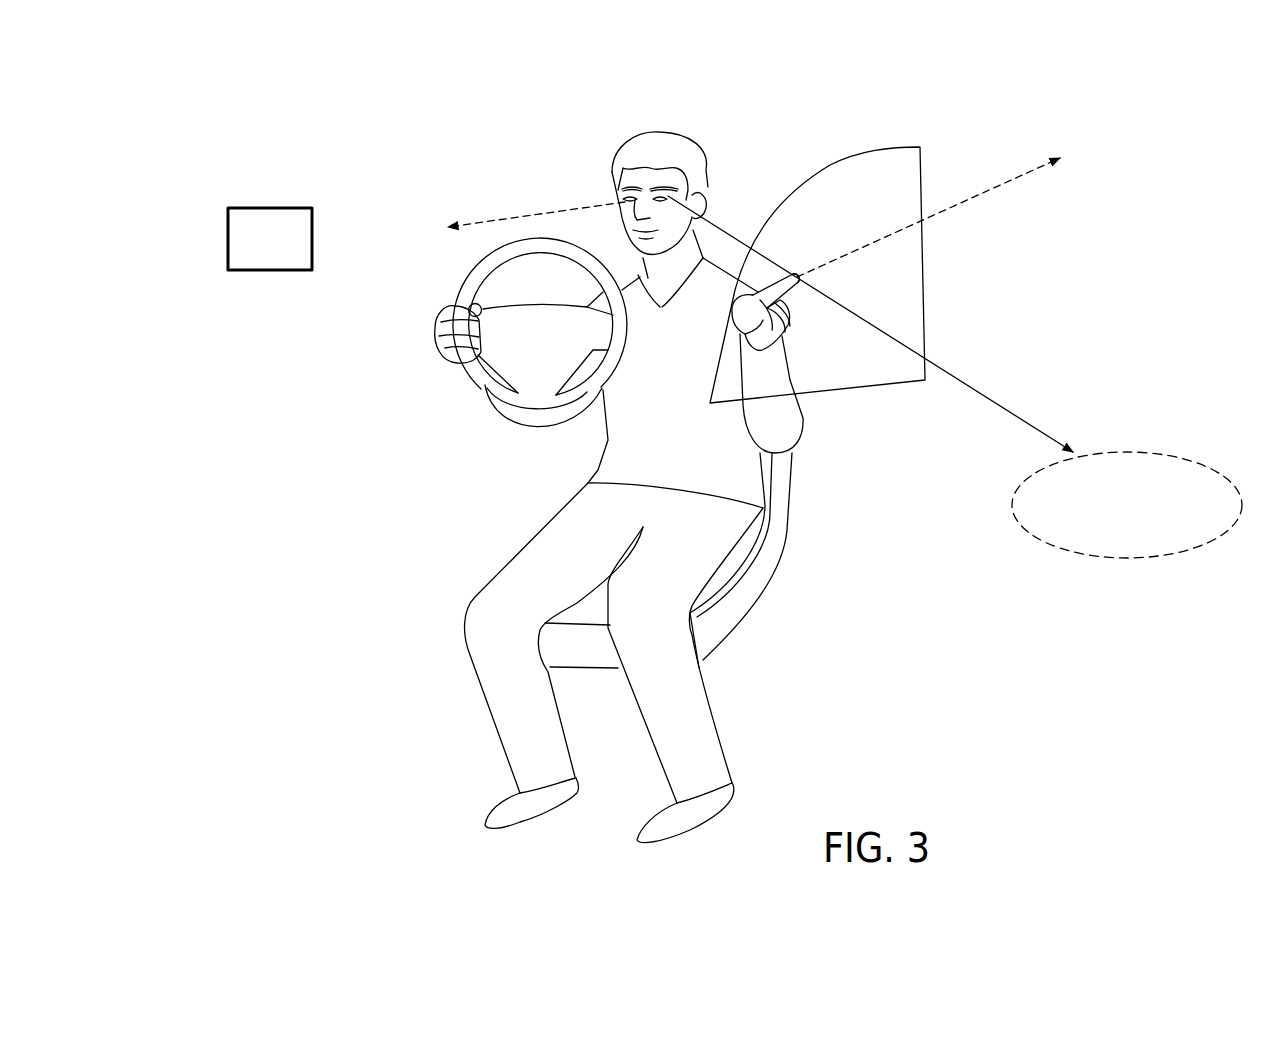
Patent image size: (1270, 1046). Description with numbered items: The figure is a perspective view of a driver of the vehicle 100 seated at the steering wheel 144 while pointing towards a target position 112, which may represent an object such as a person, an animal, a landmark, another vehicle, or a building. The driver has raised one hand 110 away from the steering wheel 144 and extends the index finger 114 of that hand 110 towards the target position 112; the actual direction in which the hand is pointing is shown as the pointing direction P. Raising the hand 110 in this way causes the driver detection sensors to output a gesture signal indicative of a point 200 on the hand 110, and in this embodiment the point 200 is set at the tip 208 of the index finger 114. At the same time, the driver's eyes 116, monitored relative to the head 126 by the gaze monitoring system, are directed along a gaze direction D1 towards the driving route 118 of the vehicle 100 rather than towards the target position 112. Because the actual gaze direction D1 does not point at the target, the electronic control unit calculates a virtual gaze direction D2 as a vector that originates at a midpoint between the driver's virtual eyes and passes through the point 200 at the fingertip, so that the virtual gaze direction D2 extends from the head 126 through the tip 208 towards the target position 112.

The vehicle 100 is at (986, 131).
The hand 110 is at (805, 327).
The target position 112 is at (1193, 460).
The finger 114 is at (797, 277).
The eyes 116 is at (620, 200).
The driving route 118 is at (312, 238).
The head 126 is at (660, 127).
The steering wheel 144 is at (480, 370).
The point 200 is at (802, 278).
The tip 208 is at (800, 276).
The gaze direction D1 is at (497, 217).
The virtual gaze direction D2 is at (977, 390).
The pointing direction P is at (1066, 156).